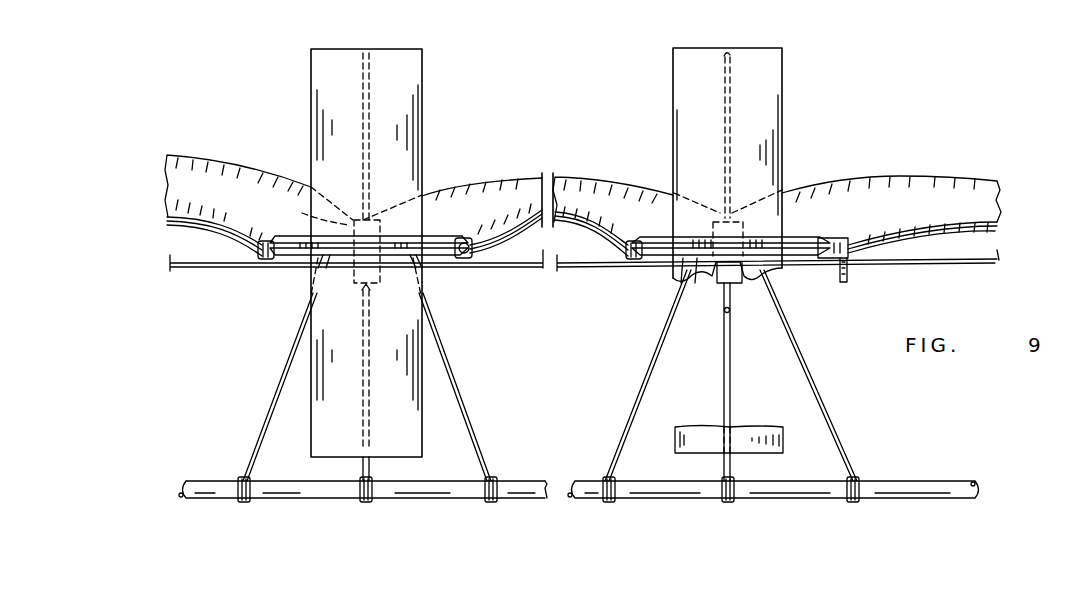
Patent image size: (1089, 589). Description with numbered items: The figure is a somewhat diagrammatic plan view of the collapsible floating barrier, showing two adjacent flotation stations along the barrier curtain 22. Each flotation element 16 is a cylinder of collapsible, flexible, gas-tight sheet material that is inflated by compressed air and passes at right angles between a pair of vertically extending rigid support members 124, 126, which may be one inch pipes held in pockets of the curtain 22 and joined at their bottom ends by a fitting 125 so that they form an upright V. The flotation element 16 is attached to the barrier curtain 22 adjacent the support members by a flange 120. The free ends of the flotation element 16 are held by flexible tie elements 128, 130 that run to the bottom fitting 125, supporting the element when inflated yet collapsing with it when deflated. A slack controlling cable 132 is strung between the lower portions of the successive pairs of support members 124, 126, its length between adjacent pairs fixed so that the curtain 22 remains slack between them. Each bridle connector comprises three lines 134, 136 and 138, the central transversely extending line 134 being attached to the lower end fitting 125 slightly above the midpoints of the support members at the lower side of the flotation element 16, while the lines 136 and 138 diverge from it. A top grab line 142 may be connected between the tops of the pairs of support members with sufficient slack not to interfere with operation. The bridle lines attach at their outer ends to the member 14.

The support rail 14 is at (323, 488).
The flotation element 16 is at (390, 58).
The barrier curtain 22 is at (588, 180).
The flange 120 is at (412, 250).
The support member 124 is at (470, 256).
The fitting 125 is at (303, 208).
The support member 126 is at (268, 258).
The flexible tie element 128 is at (365, 408).
The flexible tie element 130 is at (370, 100).
The slack controlling cable 132 is at (200, 265).
The central line 134 is at (370, 470).
The line 136 is at (456, 379).
The line 138 is at (278, 380).
The top grab line 142 is at (474, 240).